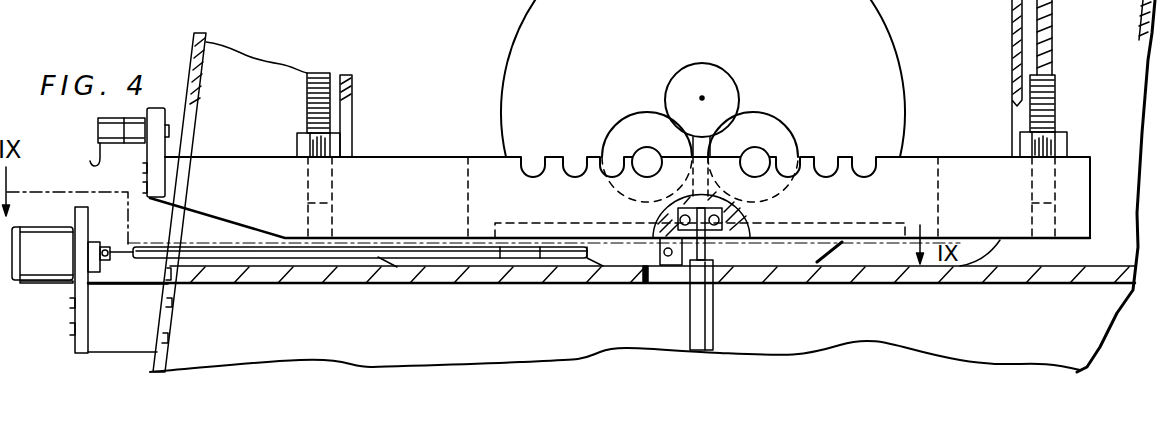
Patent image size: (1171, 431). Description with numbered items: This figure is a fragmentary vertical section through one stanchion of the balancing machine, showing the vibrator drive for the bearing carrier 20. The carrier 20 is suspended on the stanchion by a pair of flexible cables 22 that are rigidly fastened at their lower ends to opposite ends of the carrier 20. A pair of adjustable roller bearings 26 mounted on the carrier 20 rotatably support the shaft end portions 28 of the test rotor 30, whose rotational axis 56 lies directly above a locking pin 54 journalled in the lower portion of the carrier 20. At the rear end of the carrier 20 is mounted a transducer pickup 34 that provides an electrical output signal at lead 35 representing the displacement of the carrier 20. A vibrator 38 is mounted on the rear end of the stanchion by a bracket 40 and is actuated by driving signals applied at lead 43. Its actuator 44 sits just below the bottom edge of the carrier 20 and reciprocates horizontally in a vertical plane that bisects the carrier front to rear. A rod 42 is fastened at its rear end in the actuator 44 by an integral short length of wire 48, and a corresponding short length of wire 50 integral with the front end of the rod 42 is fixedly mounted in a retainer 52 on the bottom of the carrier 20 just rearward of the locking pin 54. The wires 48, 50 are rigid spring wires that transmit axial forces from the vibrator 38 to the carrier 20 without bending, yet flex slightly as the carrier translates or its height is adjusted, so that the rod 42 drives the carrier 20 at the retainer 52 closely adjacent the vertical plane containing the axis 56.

The bearing carrier 20 is at (393, 168).
The flexible cable 22 is at (323, 73).
The adjustable roller bearing 26 is at (628, 126).
The shaft end portion 28 is at (736, 78).
The test rotor 30 is at (881, 30).
The transducer pickup 34 is at (112, 118).
The lead 35 is at (88, 160).
The vibrator 38 is at (22, 283).
The bracket 40 is at (100, 336).
The rod 42 is at (335, 253).
The lead 43 is at (30, 284).
The actuator 44 is at (107, 243).
The wire 48 is at (127, 259).
The wire 50 is at (602, 265).
The retainer 52 is at (660, 258).
The locking pin 54 is at (703, 312).
The rotational axis 56 is at (702, 97).